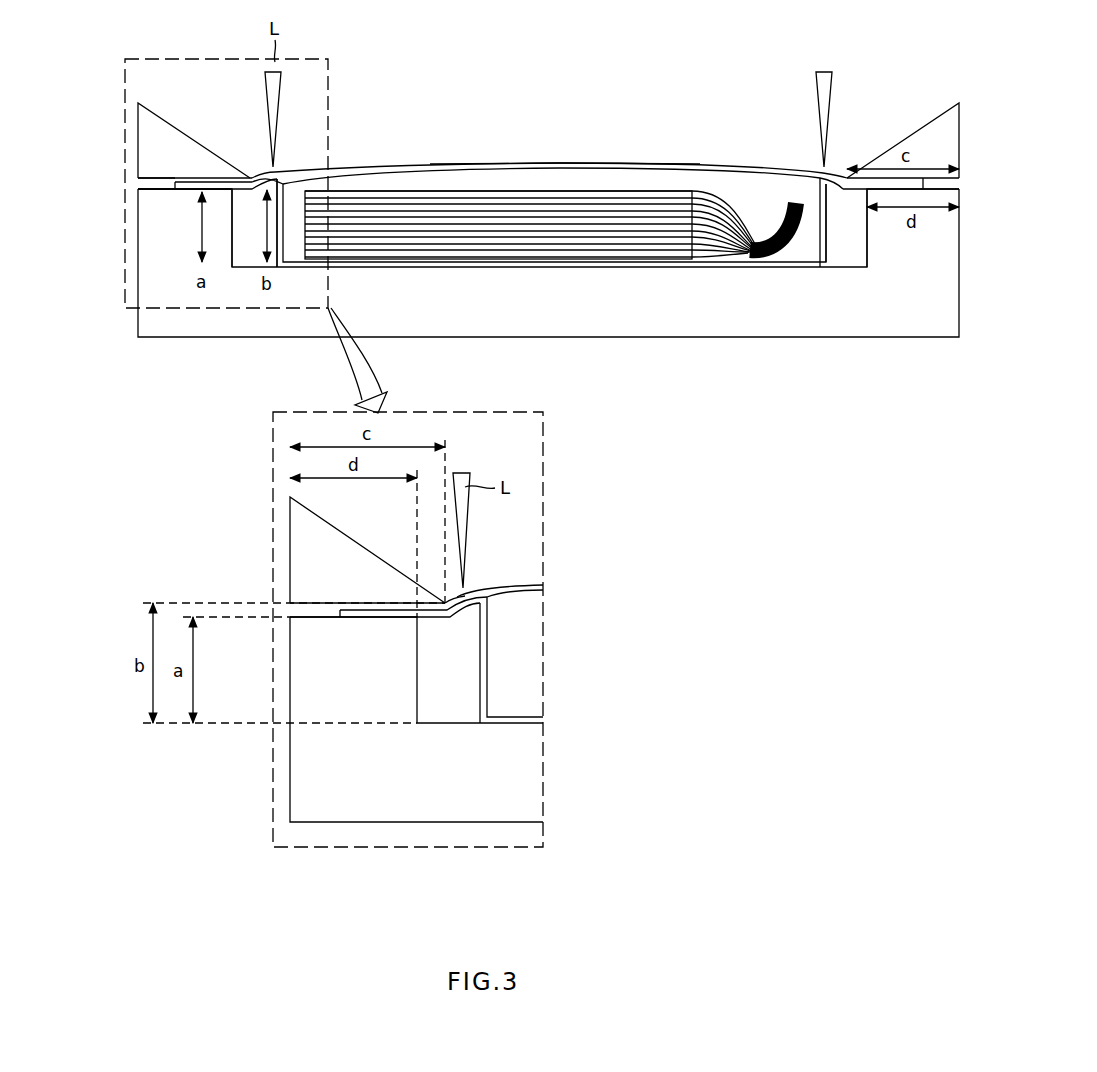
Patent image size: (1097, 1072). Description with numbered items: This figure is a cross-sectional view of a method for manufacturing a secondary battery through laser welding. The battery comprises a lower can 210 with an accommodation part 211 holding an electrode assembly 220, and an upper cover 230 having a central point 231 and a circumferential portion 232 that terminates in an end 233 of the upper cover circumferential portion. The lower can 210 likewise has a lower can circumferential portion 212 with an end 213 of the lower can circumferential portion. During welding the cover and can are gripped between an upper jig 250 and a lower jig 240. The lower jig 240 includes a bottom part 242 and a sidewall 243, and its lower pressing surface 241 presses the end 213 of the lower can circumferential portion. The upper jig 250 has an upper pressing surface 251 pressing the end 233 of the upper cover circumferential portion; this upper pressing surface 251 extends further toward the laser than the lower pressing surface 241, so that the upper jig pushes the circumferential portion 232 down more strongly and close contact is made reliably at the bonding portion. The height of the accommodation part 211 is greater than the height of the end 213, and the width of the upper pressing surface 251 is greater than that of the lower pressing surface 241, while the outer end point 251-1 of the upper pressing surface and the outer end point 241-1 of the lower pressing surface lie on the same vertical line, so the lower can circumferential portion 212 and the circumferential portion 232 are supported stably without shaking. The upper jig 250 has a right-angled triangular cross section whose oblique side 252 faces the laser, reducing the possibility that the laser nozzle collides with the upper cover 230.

The lower can 210 is at (722, 280).
The accommodation part 211 is at (833, 250).
The lower can circumferential portion 212 is at (258, 192).
The end of lower can circumferential portion 213 is at (230, 193).
The electrode assembly 220 is at (480, 240).
The upper cover 230 is at (385, 150).
The central point of upper cover 231 is at (548, 163).
The circumferential portion of upper cover 232 is at (260, 175).
The end of upper cover circumferential portion 233 is at (248, 175).
The lower jig 240 is at (112, 291).
The lower pressing surface 241 is at (150, 190).
The outer end point of lower pressing surface 241-1 is at (142, 190).
The bottom part 242 is at (596, 270).
The sidewall 243 is at (868, 233).
The upper jig 250 is at (112, 123).
The upper pressing surface 251 is at (155, 178).
The outer end point of upper pressing surface 251-1 is at (142, 177).
The oblique side of right-angled triangle 252 is at (173, 125).